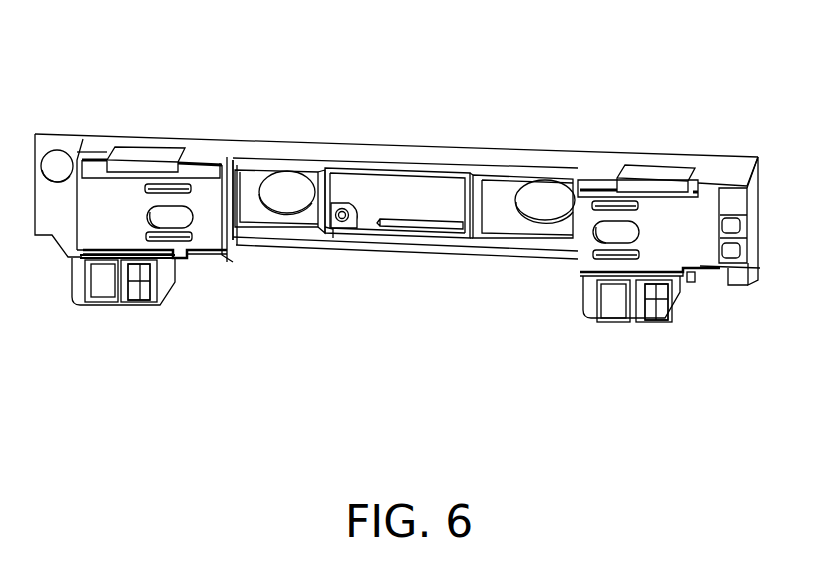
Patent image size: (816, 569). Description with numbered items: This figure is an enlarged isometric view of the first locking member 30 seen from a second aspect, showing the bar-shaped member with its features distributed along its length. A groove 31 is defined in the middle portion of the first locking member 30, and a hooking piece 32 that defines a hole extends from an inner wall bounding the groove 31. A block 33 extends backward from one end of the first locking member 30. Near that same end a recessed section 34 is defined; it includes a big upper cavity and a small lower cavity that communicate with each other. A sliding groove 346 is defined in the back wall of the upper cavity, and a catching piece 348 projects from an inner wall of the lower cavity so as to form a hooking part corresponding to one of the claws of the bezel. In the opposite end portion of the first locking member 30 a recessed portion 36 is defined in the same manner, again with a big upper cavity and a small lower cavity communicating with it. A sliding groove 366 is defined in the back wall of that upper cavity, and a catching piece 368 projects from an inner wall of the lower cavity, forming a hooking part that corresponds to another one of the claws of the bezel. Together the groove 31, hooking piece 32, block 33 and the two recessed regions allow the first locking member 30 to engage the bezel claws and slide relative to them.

The first locking member 30 is at (397, 201).
The groove 31 is at (427, 203).
The hooking piece 32 is at (337, 222).
The block 33 is at (756, 231).
The recessed section 34 is at (686, 303).
The sliding groove 346 is at (600, 230).
The catching piece 348 is at (662, 298).
The recessed portion 36 is at (77, 292).
The sliding groove 366 is at (183, 217).
The catching piece 368 is at (150, 282).